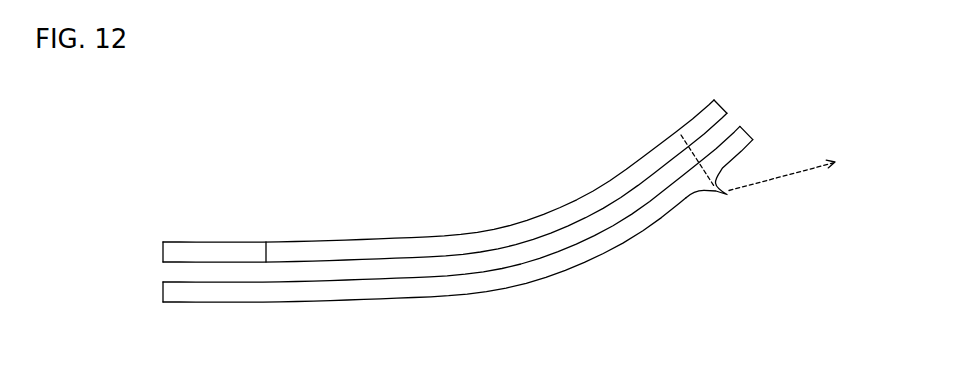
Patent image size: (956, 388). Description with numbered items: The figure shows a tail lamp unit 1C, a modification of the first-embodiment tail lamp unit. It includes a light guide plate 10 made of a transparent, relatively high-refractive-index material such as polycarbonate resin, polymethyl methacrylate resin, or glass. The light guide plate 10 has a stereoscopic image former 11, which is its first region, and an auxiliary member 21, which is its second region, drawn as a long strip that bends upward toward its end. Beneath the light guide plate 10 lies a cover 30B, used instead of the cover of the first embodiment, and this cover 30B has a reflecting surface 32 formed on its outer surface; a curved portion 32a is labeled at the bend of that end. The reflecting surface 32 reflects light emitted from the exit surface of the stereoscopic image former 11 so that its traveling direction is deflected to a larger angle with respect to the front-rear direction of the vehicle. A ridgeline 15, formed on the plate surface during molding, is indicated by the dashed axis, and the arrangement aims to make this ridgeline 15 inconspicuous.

The tail lamp unit 1C is at (206, 130).
The light guide plate 10 is at (160, 253).
The stereoscopic image former 11 is at (507, 235).
The auxiliary member 21 is at (203, 251).
The cover 30B is at (160, 295).
The reflecting surface 32 is at (718, 198).
The curved surface 32a is at (707, 193).
The ridgeline 15 is at (720, 187).